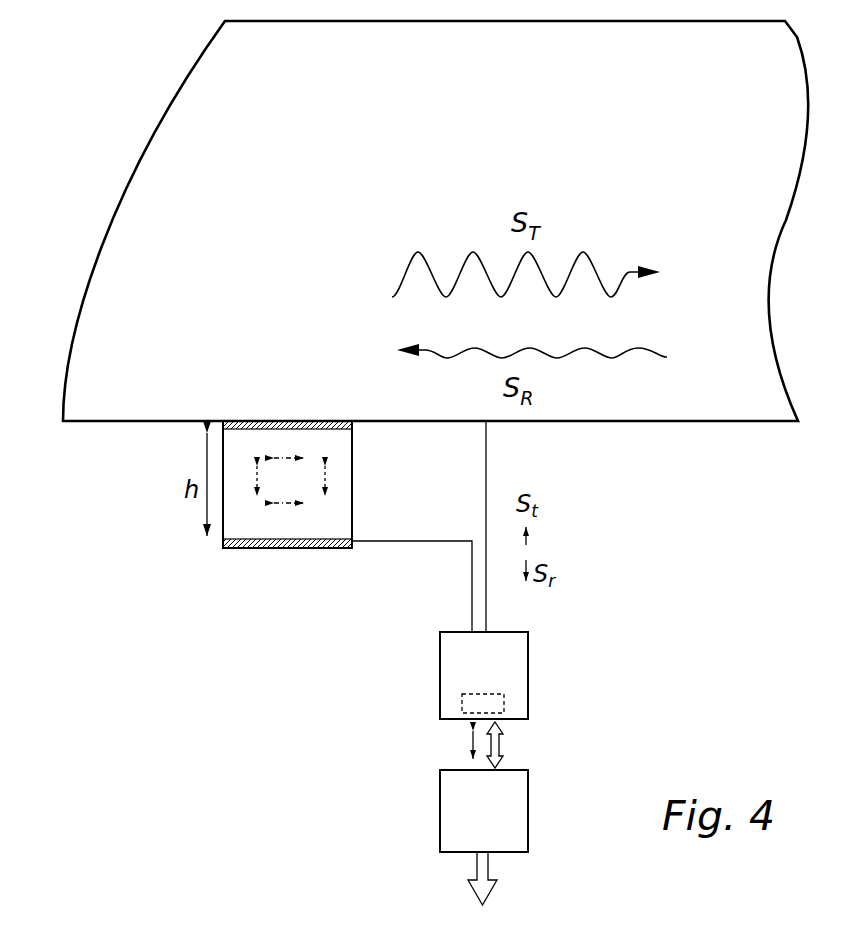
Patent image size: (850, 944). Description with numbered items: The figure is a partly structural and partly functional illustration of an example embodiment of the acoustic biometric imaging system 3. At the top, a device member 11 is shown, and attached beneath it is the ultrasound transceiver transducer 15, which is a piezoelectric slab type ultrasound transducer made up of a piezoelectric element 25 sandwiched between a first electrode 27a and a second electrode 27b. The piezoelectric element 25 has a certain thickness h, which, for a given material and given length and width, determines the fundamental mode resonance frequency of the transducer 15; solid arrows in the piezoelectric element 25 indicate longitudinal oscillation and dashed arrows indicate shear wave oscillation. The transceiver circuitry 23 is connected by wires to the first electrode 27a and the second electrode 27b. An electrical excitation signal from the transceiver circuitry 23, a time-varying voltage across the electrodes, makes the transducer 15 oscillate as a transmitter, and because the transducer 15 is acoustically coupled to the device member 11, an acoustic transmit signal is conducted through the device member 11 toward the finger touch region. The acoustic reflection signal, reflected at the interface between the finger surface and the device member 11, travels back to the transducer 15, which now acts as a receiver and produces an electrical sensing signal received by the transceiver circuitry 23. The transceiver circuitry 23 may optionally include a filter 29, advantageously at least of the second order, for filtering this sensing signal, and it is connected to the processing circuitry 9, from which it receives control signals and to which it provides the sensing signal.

The device member 11 is at (734, 77).
The ultrasound transceiver transducer 15 is at (322, 544).
The piezoelectric element 25 is at (287, 484).
The first electrode 27a is at (327, 548).
The second electrode 27b is at (325, 430).
The transceiver circuitry 23 is at (528, 665).
The filter 29 is at (462, 702).
The processing circuitry 9 is at (528, 807).
The acoustic biometric imaging system 3 is at (648, 587).